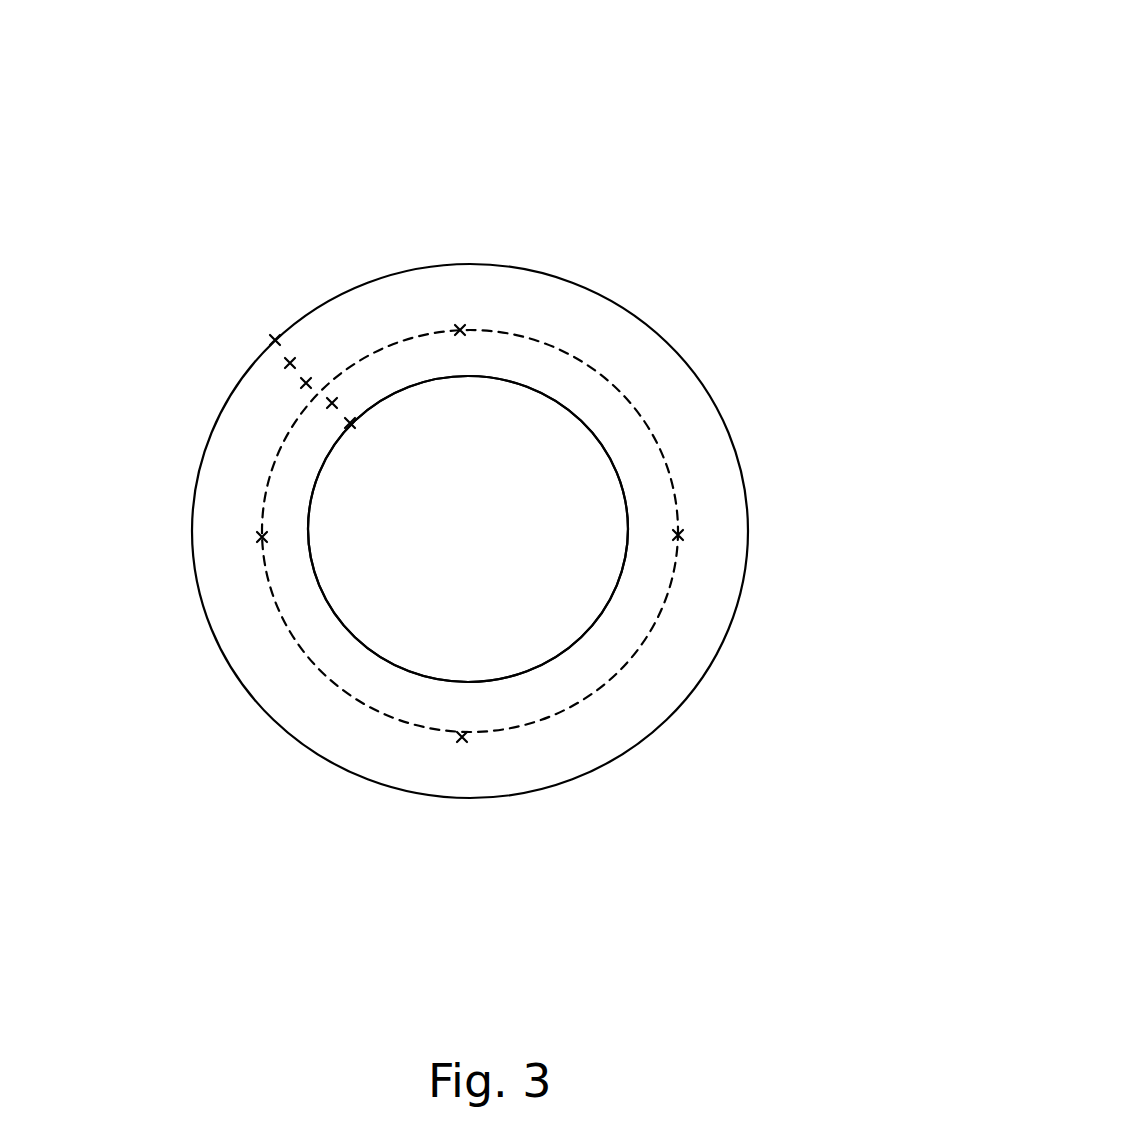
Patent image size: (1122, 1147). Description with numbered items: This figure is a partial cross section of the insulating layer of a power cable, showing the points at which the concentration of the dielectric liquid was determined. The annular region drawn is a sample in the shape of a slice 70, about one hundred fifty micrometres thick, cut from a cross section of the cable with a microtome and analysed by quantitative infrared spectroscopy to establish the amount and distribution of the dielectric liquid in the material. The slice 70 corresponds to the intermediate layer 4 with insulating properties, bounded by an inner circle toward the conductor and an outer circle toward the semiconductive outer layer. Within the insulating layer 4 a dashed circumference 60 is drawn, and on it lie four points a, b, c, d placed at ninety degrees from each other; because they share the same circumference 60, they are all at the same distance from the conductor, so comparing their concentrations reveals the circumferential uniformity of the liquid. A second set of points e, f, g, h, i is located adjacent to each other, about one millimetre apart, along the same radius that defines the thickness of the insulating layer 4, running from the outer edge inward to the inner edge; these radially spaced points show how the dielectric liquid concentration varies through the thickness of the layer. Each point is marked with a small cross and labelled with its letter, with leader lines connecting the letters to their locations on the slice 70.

The slice sample 70 is at (662, 222).
The intermediate layer 4 is at (584, 595).
The circumference 60 is at (493, 613).
The measurement point a is at (477, 311).
The measurement point b is at (694, 521).
The measurement point c is at (446, 749).
The measurement point d is at (241, 534).
The measurement point e is at (221, 239).
The measurement point f is at (352, 264).
The measurement point g is at (190, 336).
The measurement point h is at (199, 446).
The measurement point i is at (415, 471).